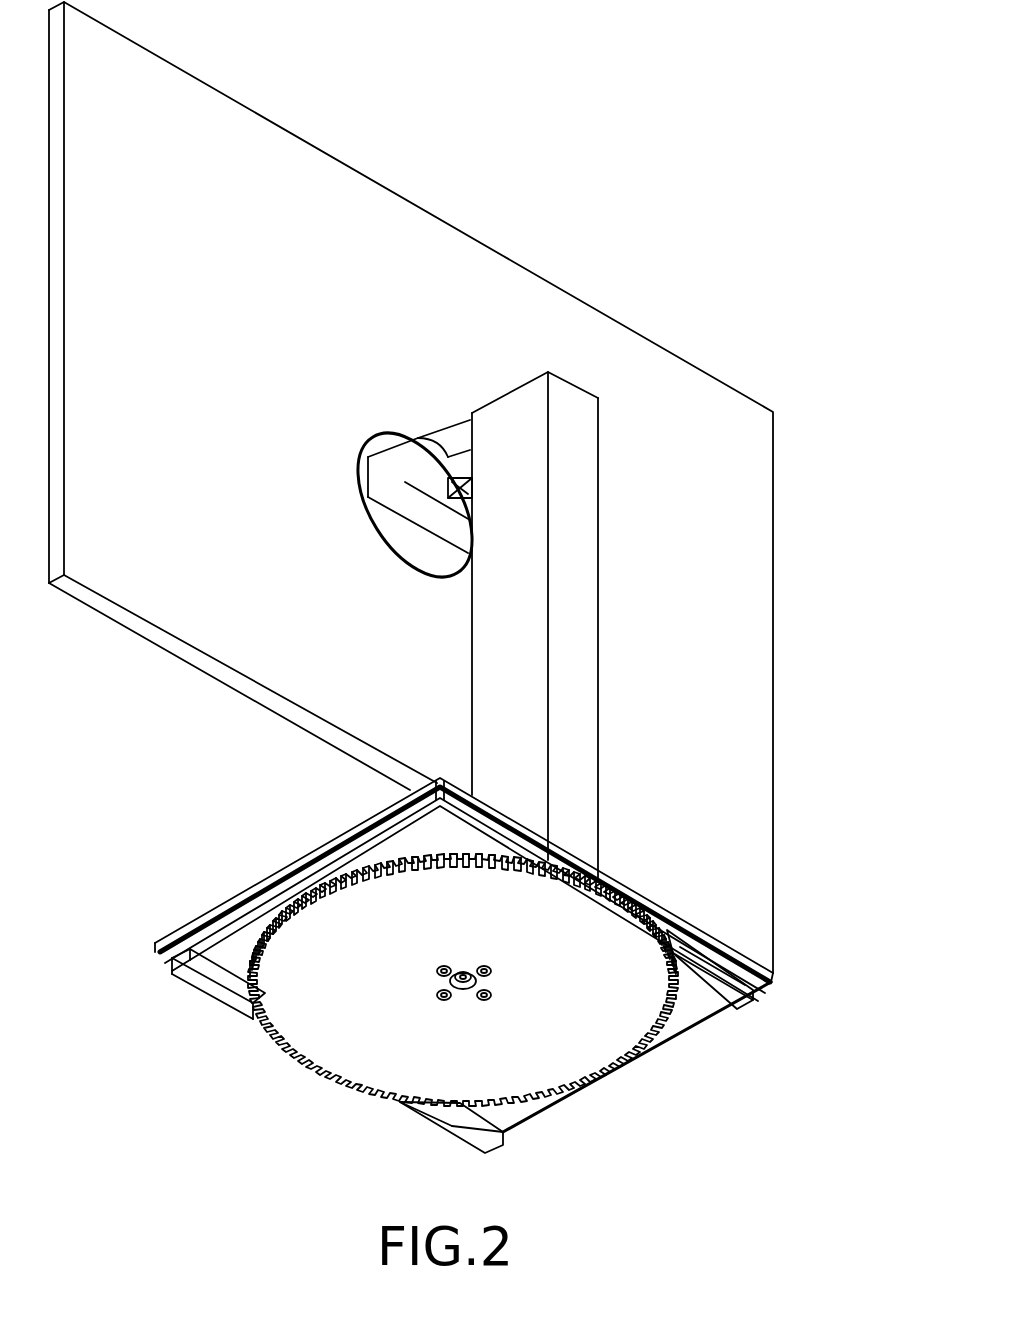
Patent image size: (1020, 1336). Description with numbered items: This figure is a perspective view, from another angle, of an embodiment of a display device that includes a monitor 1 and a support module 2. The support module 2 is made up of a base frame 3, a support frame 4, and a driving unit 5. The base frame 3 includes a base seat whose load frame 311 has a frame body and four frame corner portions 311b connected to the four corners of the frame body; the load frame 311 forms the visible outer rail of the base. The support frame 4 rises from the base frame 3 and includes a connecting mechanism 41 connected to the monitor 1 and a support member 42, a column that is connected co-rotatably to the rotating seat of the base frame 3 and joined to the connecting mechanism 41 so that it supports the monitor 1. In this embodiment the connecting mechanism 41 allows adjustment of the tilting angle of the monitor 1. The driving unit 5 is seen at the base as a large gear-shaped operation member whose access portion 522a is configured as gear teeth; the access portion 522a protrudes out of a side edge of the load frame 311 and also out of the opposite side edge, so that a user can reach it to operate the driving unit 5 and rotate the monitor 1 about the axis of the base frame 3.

The monitor 1 is at (495, 250).
The support module 2 is at (802, 659).
The base frame 3 is at (425, 946).
The support frame 4 is at (530, 621).
The connecting mechanism 41 is at (448, 487).
The support member 42 is at (565, 550).
The load frame 311 is at (232, 935).
The frame corner portions 311b is at (205, 990).
The driving unit 5 is at (427, 1006).
The access portion 522a is at (295, 1058).